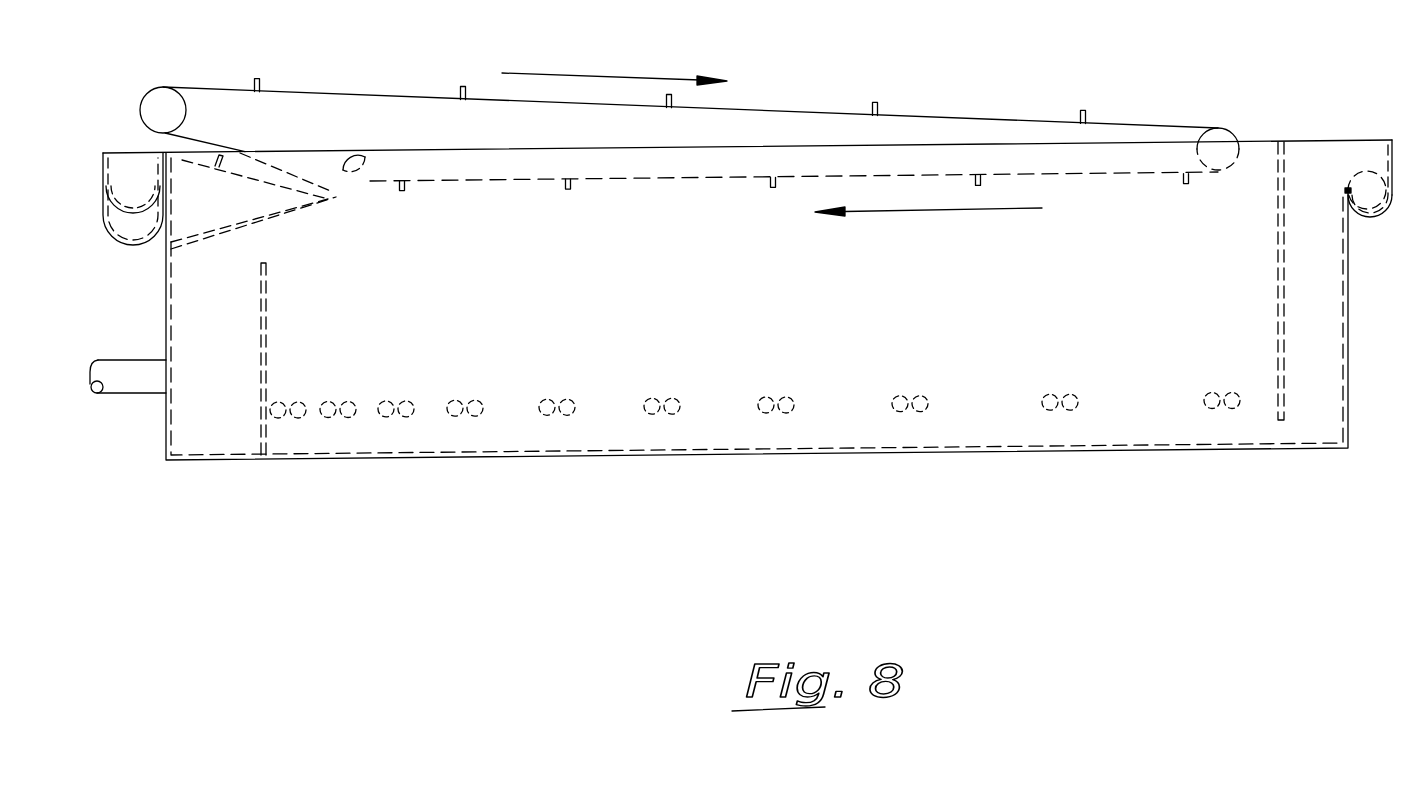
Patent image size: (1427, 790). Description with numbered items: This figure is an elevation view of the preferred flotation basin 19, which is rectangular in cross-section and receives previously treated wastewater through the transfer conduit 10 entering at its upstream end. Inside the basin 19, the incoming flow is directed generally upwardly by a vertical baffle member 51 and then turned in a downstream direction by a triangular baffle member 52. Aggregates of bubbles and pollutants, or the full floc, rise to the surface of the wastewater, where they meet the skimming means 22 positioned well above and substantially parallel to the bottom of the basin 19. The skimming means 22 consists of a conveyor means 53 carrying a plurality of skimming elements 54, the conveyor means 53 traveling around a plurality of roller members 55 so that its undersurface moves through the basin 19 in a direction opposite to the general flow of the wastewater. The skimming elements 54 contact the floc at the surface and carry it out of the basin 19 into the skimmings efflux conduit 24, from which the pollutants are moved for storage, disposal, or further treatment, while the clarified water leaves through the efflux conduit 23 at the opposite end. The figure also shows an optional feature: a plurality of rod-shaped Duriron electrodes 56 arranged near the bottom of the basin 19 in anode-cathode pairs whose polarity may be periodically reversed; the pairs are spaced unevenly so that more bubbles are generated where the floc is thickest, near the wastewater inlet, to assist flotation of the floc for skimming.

The transfer conduit 10 is at (128, 358).
The flotation basin 19 is at (165, 440).
The skimming means 22 is at (690, 109).
The efflux conduit 23 is at (1368, 196).
The skimmings efflux conduit 24 is at (127, 190).
The vertical baffle member 51 is at (266, 342).
The triangular baffle member 52 is at (195, 188).
The conveyor means 53 is at (348, 93).
The skimming elements 54 is at (877, 103).
The roller members 55 is at (167, 108).
The rod-shaped Duriron electrodes 56 is at (793, 405).